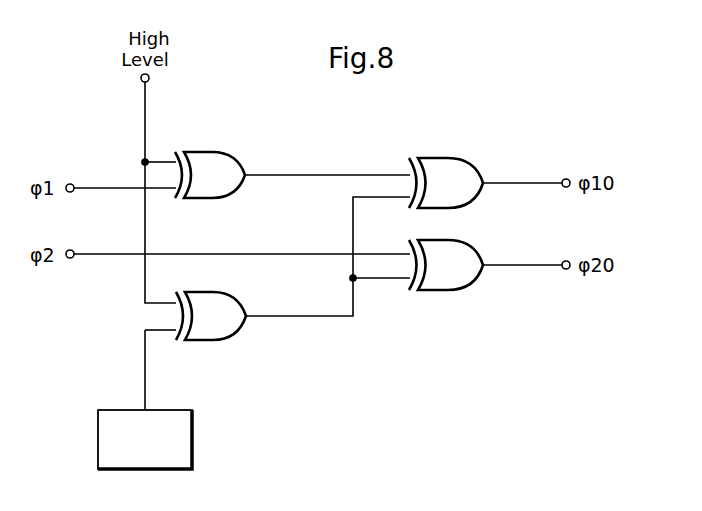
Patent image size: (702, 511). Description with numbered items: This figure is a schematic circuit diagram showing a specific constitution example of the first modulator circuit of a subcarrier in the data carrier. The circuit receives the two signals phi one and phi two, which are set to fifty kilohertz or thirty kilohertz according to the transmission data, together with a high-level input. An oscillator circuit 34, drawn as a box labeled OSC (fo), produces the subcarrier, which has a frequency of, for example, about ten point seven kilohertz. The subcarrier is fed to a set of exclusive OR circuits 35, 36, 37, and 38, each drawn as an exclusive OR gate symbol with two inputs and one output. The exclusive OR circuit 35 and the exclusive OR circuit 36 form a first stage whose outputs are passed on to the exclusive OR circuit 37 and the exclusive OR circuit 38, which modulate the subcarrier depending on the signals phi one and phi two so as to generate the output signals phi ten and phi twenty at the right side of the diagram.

The oscillator circuit 34 is at (193, 440).
The exclusive OR circuit 35 is at (243, 179).
The exclusive OR circuit 36 is at (244, 310).
The exclusive OR circuit 37 is at (480, 178).
The exclusive OR circuit 38 is at (480, 260).